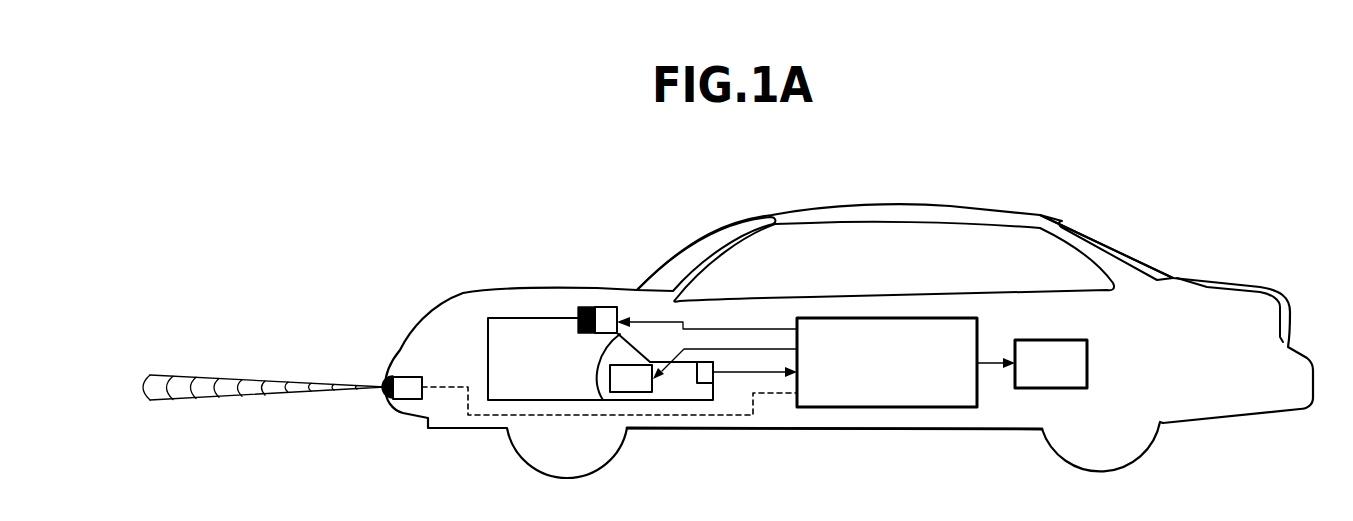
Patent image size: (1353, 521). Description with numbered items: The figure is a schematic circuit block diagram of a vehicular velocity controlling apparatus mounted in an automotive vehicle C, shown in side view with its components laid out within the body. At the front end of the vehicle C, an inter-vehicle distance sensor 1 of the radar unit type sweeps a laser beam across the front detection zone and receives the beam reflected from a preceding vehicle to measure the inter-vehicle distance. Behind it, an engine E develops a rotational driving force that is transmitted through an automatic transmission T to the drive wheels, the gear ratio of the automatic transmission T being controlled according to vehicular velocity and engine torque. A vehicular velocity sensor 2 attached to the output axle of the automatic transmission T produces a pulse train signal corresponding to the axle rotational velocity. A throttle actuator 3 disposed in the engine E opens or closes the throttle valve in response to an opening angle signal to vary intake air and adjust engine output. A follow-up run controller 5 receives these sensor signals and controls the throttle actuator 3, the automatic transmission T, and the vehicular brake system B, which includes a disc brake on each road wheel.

The inter-vehicle distance sensor 1 is at (407, 390).
The vehicular velocity sensor 2 is at (710, 377).
The throttle actuator 3 is at (607, 311).
The follow-up run controller 5 is at (907, 407).
The engine E is at (527, 330).
The automatic transmission T is at (643, 393).
The vehicular brake system B is at (1032, 388).
The automotive vehicle C is at (977, 189).